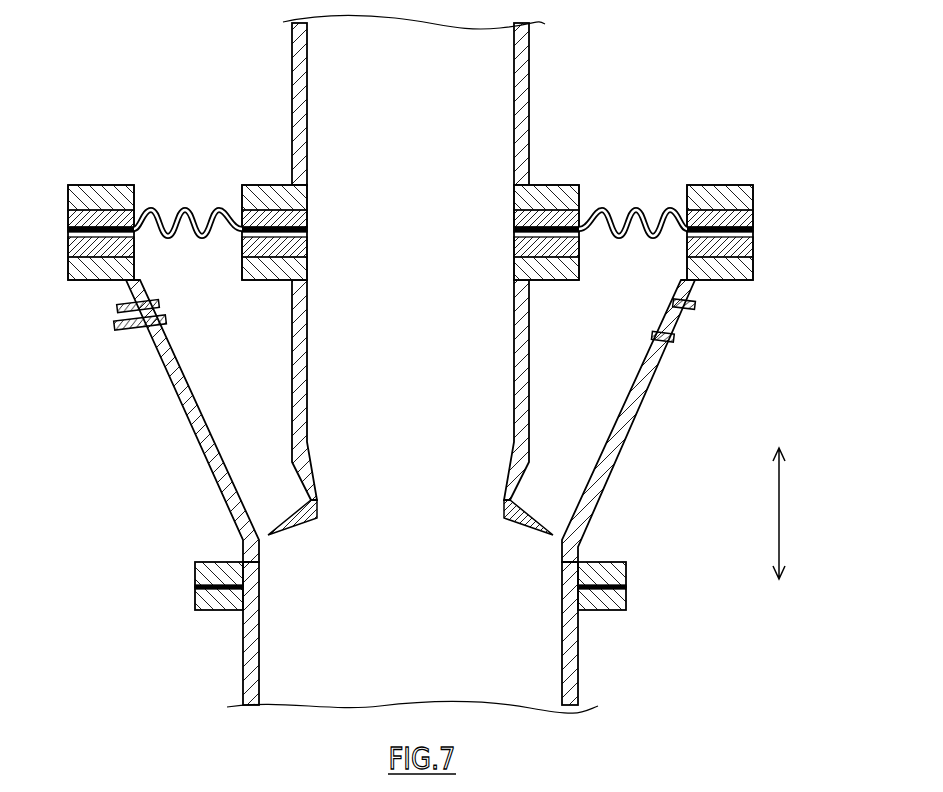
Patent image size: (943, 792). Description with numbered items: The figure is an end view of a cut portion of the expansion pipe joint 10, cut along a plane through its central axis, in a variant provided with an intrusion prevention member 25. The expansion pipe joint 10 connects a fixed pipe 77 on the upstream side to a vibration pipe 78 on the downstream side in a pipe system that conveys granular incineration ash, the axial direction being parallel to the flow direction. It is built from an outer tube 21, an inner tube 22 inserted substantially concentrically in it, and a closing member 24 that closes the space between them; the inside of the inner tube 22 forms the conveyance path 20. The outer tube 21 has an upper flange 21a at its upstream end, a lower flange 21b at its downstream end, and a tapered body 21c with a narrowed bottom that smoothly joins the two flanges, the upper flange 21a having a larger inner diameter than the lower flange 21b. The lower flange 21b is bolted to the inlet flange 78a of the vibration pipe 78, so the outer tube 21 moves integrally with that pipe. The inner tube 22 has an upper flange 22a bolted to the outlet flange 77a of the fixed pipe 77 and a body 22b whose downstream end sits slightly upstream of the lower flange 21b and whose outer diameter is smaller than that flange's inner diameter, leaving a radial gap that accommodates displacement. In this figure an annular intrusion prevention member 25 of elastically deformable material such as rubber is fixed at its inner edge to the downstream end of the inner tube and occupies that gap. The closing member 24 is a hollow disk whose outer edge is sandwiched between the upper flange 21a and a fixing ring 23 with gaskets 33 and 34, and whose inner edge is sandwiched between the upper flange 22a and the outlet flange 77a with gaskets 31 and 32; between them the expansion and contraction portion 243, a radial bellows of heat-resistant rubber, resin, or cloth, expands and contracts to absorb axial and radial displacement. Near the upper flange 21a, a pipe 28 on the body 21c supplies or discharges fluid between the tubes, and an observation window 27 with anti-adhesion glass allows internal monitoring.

The expansion pipe joint 10 is at (434, 364).
The conveyance path 20 is at (422, 362).
The outer tube 21 is at (618, 460).
The upper flange 21a is at (83, 283).
The lower flange 21b is at (194, 562).
The body 21c is at (205, 463).
The inner tube 22 is at (290, 409).
The upper flange 22a is at (298, 269).
The body 22b is at (532, 323).
The fixing ring 23 is at (761, 187).
The closing member 24 is at (638, 207).
The intrusion prevention member 25 is at (304, 527).
The observation window 27 is at (690, 313).
The pipe 28 is at (120, 330).
The gasket 31 is at (308, 218).
The gasket 32 is at (308, 247).
The gasket 33 is at (754, 217).
The gasket 34 is at (754, 248).
The fixed pipe 77 is at (532, 68).
The outlet flange 77a is at (557, 185).
The vibration pipe 78 is at (579, 669).
The inlet flange 78a is at (628, 598).
The expansion and contraction portion 243 is at (190, 207).